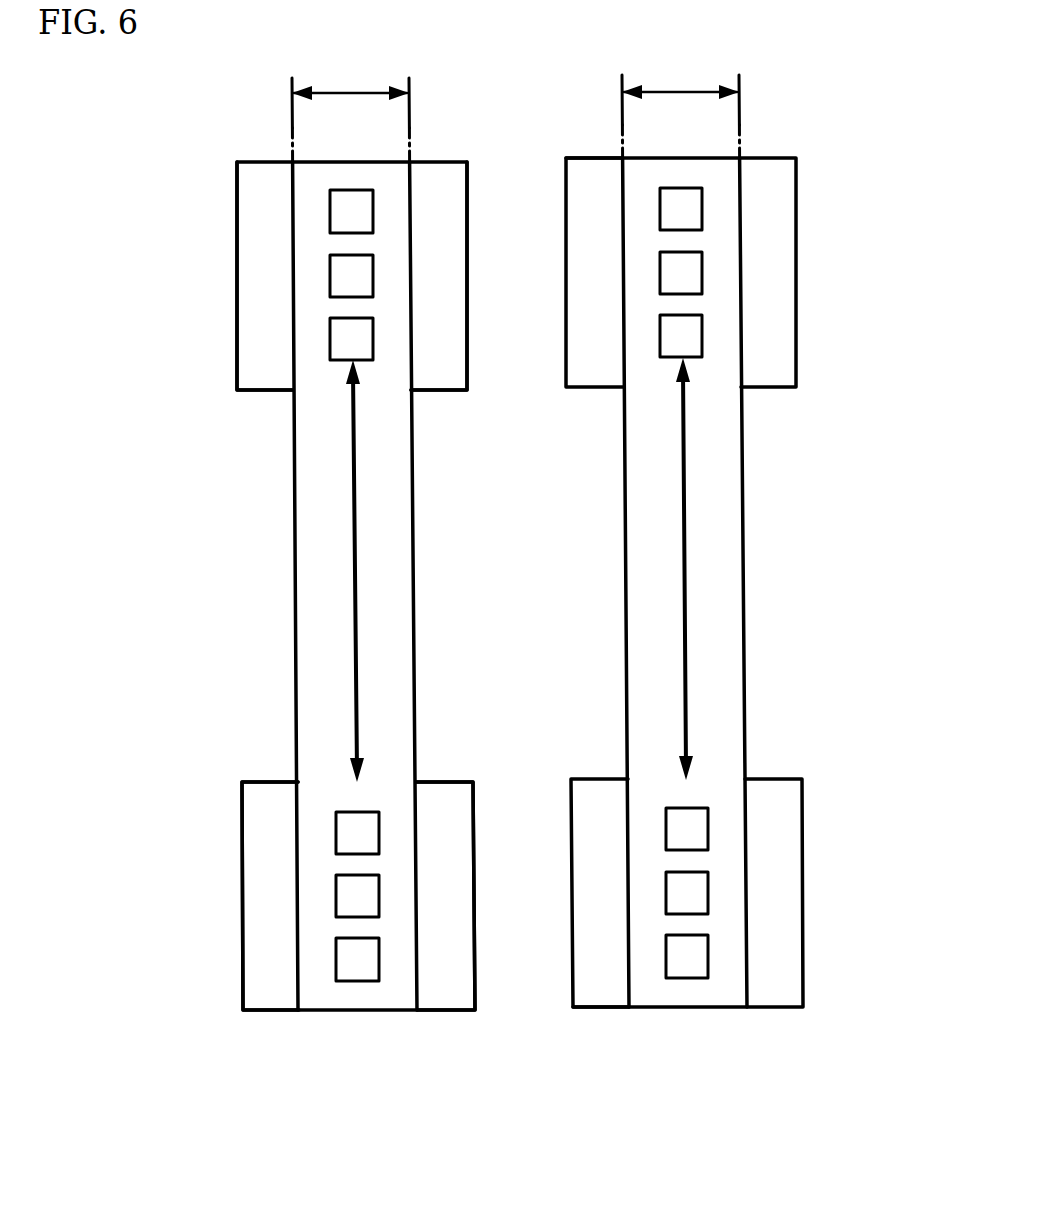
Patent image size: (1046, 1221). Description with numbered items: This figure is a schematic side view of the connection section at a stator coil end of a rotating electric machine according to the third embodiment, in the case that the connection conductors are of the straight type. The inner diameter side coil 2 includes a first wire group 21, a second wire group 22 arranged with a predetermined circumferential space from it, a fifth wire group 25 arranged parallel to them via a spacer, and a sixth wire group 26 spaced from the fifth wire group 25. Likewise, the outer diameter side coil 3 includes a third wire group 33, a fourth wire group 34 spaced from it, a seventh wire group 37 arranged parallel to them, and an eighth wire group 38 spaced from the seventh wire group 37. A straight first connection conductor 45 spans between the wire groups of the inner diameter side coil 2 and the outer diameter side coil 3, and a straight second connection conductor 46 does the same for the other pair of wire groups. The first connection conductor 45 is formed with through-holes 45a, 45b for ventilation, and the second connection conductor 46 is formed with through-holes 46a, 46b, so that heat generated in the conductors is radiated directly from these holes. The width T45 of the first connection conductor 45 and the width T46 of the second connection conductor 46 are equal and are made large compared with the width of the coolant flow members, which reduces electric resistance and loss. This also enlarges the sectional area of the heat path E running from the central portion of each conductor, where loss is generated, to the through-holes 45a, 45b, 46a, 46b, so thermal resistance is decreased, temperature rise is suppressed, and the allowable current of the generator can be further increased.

The inner diameter side coil 2 is at (233, 830).
The outer diameter side coil 3 is at (210, 207).
The first wire group 21 is at (258, 1000).
The second wire group 22 is at (449, 1000).
The fifth wire group 25 is at (597, 997).
The sixth wire group 26 is at (787, 997).
The third wire group 33 is at (262, 342).
The fourth wire group 34 is at (437, 175).
The seventh wire group 37 is at (590, 172).
The eighth wire group 38 is at (770, 223).
The first connection conductor 45 is at (328, 563).
The through-hole 45a is at (340, 890).
The through-hole 45b is at (330, 268).
The second connection conductor 46 is at (705, 562).
The through-hole 46a is at (695, 893).
The through-hole 46b is at (690, 278).
The heat path E is at (355, 683).
The width of first connection conductor T45 is at (348, 93).
The width of second connection conductor T46 is at (678, 93).